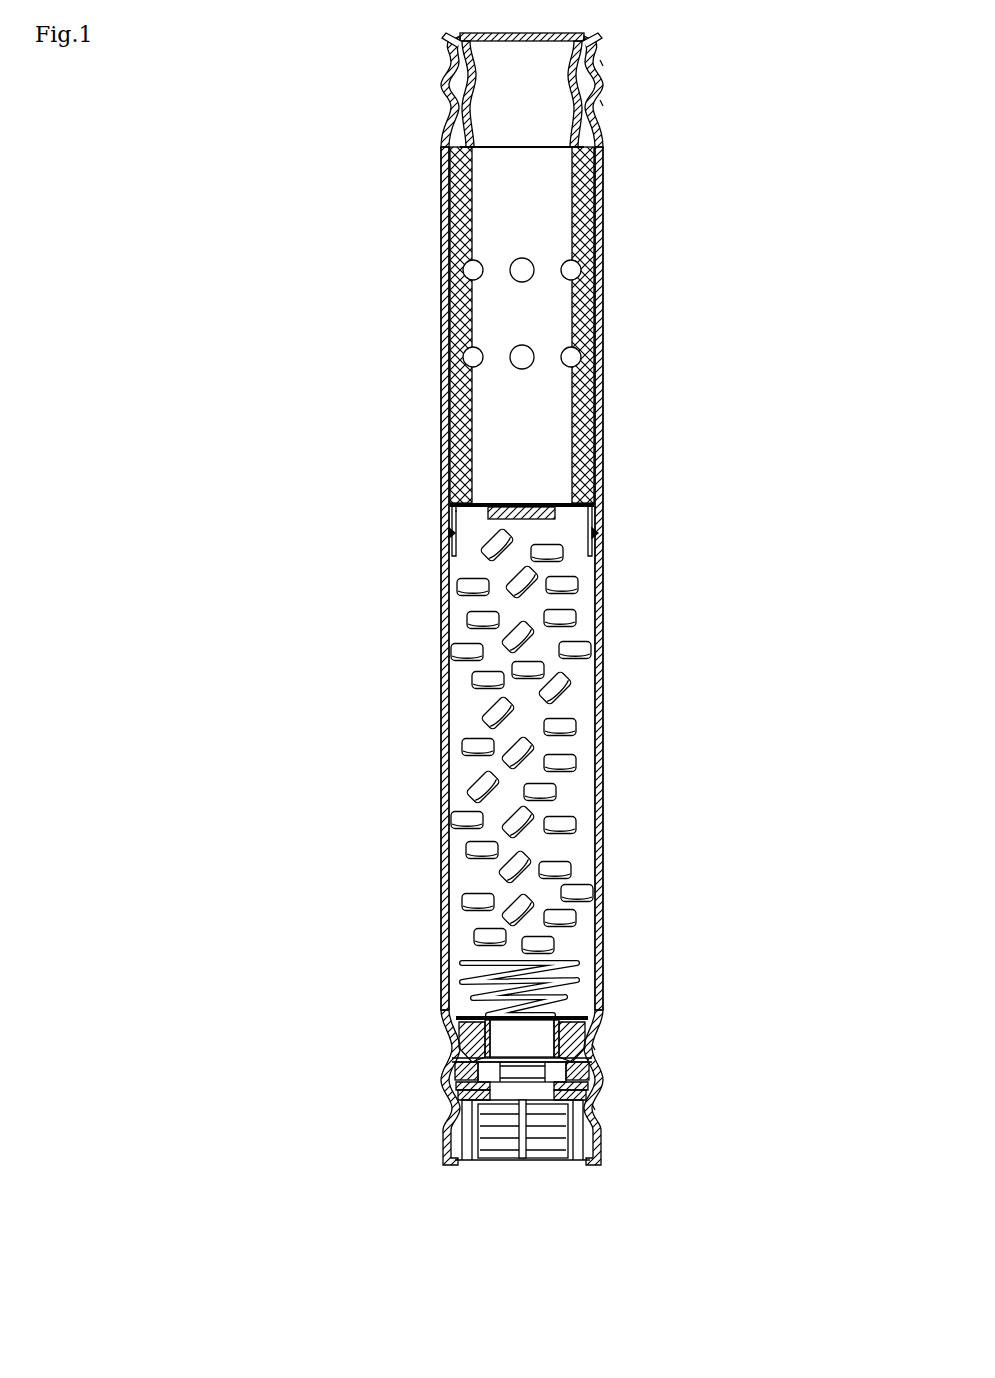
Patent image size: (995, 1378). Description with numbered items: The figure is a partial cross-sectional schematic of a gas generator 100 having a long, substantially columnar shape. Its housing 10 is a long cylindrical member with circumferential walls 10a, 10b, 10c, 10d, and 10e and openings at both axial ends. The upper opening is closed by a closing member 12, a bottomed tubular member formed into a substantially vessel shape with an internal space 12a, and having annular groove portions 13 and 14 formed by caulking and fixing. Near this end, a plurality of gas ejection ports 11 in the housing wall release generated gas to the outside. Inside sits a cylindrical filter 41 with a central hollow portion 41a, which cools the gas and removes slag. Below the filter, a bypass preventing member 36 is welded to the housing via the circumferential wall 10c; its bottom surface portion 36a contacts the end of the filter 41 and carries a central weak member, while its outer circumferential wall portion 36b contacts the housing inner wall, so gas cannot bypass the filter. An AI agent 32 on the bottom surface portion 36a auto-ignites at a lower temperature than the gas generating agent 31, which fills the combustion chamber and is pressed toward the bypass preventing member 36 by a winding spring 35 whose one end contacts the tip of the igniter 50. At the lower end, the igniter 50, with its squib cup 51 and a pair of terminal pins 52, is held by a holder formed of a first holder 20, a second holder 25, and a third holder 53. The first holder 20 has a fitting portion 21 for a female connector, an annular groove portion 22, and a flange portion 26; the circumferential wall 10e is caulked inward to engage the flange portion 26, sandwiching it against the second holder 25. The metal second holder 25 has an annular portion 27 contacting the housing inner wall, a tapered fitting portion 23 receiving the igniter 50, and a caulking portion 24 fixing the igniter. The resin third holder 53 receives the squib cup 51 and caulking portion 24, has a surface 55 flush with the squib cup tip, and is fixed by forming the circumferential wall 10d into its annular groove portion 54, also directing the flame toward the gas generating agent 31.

The gas generator 100 is at (242, 128).
The housing 10 is at (441, 752).
The circumferential wall 10a is at (598, 63).
The circumferential wall 10b is at (598, 103).
The circumferential wall 10c is at (449, 533).
The circumferential wall 10d is at (596, 1046).
The circumferential wall 10e is at (596, 1107).
The gas ejection port 11 is at (432, 357).
The closing member 12 is at (525, 80).
The internal space 12a is at (508, 124).
The annular groove portion 13 is at (448, 86).
The annular groove portion 14 is at (448, 48).
The first holder 20 is at (471, 1159).
The fitting portion 21 is at (442, 1167).
The annular groove portion 22 is at (457, 1102).
The fitting portion 23 is at (522, 1115).
The caulking portion 24 is at (457, 1060).
The second holder 25 is at (457, 1086).
The flange portion 26 is at (458, 1095).
The annular portion 27 is at (455, 1071).
The gas generating agent 31 is at (560, 762).
The AI agent 32 is at (457, 571).
The winding spring 35 is at (463, 972).
The bypass preventing member 36 is at (545, 489).
The bottom surface portion 36a is at (553, 505).
The outer circumferential wall portion 36b is at (600, 533).
The filter 41 is at (585, 325).
The hollow portion 41a is at (556, 302).
The igniter 50 is at (585, 1092).
The squib cup 51 is at (590, 1035).
The terminal pin 52 is at (590, 1147).
The third holder 53 is at (458, 1024).
The annular groove portion 54 is at (457, 1040).
The surface 55 is at (578, 1012).